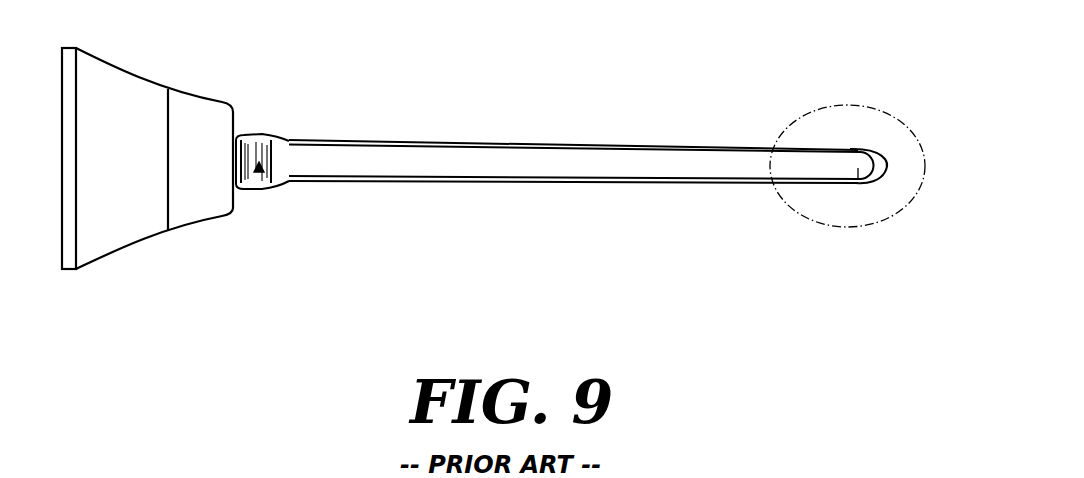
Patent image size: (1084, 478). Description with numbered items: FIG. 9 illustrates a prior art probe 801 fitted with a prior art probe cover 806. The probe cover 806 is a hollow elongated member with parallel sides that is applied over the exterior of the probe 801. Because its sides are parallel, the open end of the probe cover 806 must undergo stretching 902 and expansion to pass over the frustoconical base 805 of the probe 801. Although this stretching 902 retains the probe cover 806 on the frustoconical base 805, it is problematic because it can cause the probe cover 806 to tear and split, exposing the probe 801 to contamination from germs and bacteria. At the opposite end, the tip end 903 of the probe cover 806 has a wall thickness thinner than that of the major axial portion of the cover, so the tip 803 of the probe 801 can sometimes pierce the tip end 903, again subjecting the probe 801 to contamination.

The probe 801 is at (427, 160).
The tip 803 is at (858, 170).
The frustoconical base 805 is at (250, 137).
The prior art probe cover 806 is at (882, 160).
The stretching 902 is at (260, 172).
The tip end 903 is at (823, 108).